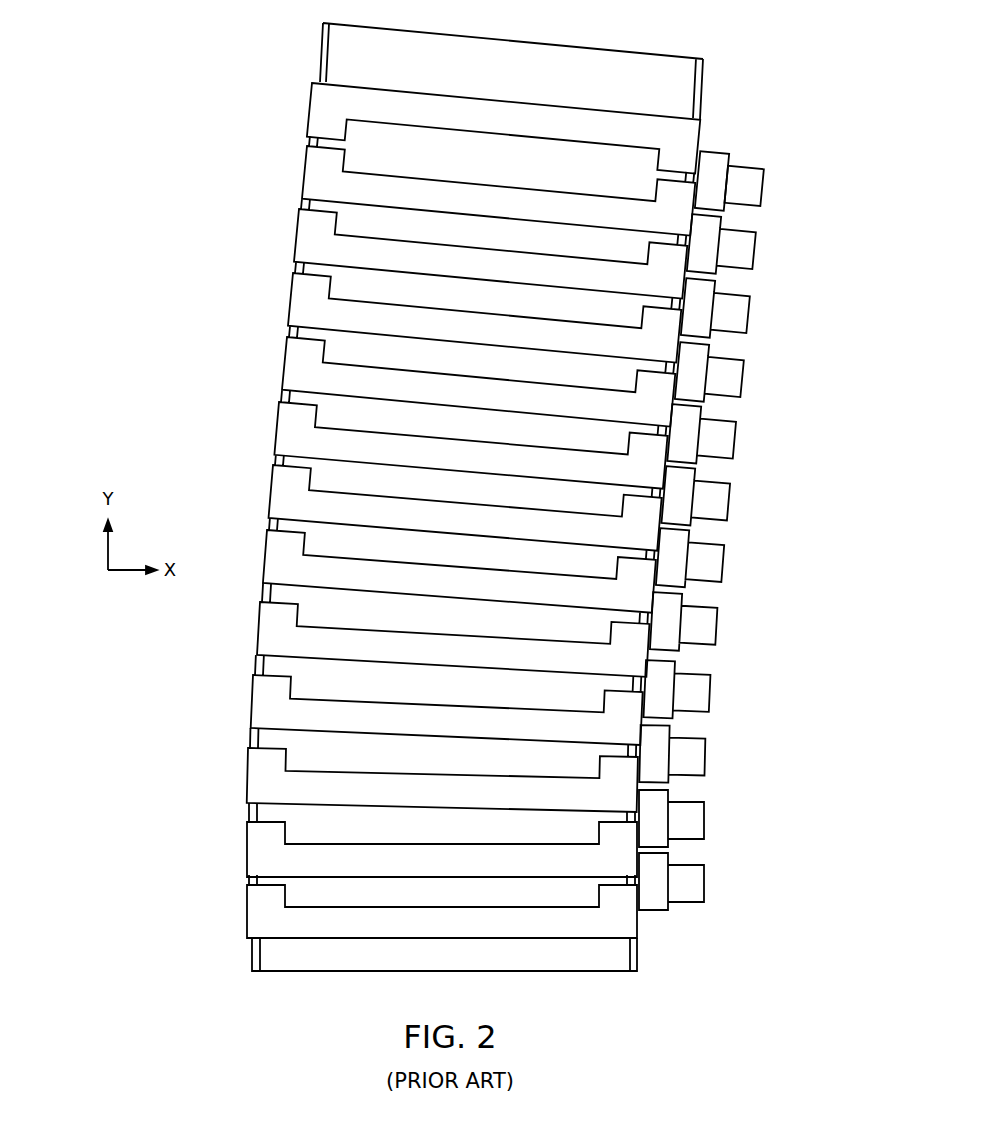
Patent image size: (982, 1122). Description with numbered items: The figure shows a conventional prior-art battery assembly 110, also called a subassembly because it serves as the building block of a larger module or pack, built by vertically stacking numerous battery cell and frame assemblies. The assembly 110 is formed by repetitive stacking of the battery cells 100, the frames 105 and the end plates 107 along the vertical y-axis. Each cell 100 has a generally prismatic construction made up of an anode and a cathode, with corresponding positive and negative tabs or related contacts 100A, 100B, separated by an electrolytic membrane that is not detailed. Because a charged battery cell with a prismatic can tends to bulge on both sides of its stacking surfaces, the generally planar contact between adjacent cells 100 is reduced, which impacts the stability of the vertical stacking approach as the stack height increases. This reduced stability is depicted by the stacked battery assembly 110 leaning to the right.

The battery cell 100 is at (373, 418).
The positive tab 100A is at (767, 186).
The negative tab 100B is at (788, 191).
The frame 105 is at (230, 722).
The end plate 107 is at (582, 59).
The battery assembly 110 is at (171, 149).